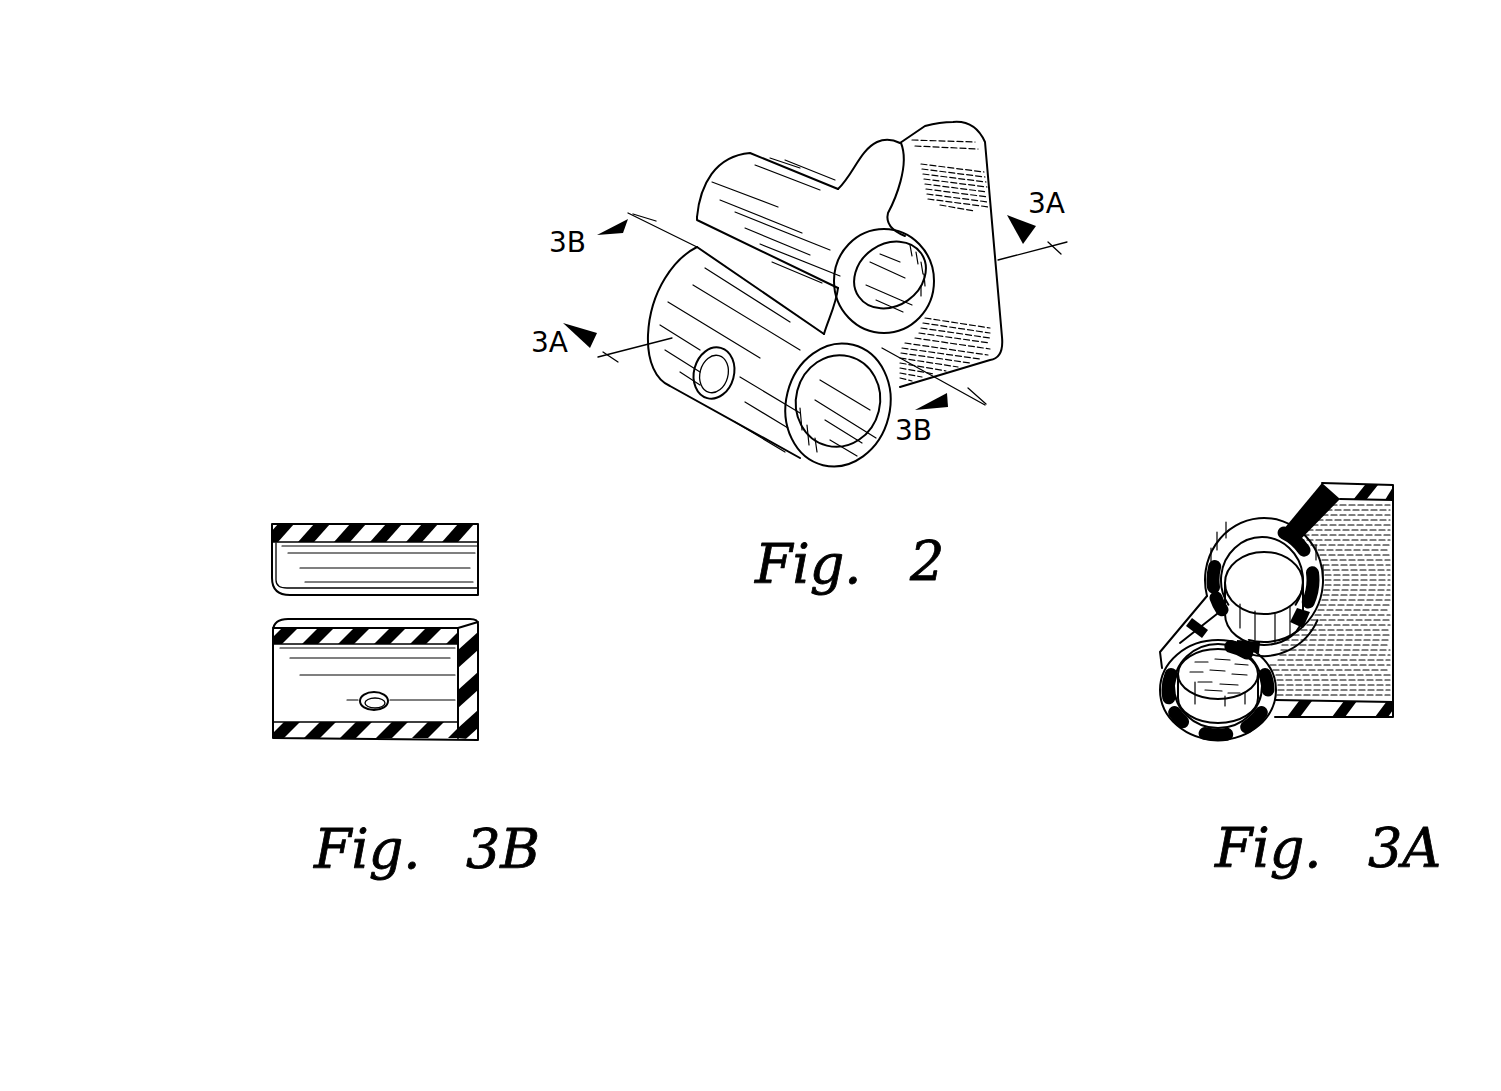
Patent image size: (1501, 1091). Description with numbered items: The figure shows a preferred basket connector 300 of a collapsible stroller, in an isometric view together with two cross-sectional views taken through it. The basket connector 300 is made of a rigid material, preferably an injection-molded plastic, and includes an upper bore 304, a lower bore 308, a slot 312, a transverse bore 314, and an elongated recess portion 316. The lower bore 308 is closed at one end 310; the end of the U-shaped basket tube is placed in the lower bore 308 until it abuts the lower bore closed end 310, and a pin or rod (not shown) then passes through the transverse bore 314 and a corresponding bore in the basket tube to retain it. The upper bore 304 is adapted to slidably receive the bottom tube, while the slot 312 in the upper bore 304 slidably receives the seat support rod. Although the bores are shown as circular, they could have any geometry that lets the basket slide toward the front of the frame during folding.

In FIG. 2, the basket connector 300 is at (803, 146).
In FIG. 3B, the basket connector 300 is at (350, 510).
In FIG. 3A, the basket connector 300 is at (1283, 497).
In FIG. 2, the upper bore 304 is at (922, 313).
In FIG. 3B, the upper bore 304 is at (267, 577).
In FIG. 3A, the upper bore 304 is at (1218, 533).
In FIG. 2, the lower bore 308 is at (863, 437).
In FIG. 3B, the lower bore 308 is at (272, 695).
In FIG. 3A, the lower bore 308 is at (1185, 728).
In FIG. 3B, the lower bore closed end 310 is at (480, 688).
In FIG. 3A, the lower bore closed end 310 is at (1177, 670).
In FIG. 2, the slot 312 is at (700, 234).
In FIG. 3B, the slot 312 is at (485, 603).
In FIG. 3A, the slot 312 is at (1217, 593).
In FIG. 2, the transverse bore 314 is at (708, 399).
In FIG. 3B, the transverse bore 314 is at (373, 707).
In FIG. 2, the elongated recess portion 316 is at (1000, 178).
In FIG. 3A, the elongated recess portion 316 is at (1377, 557).